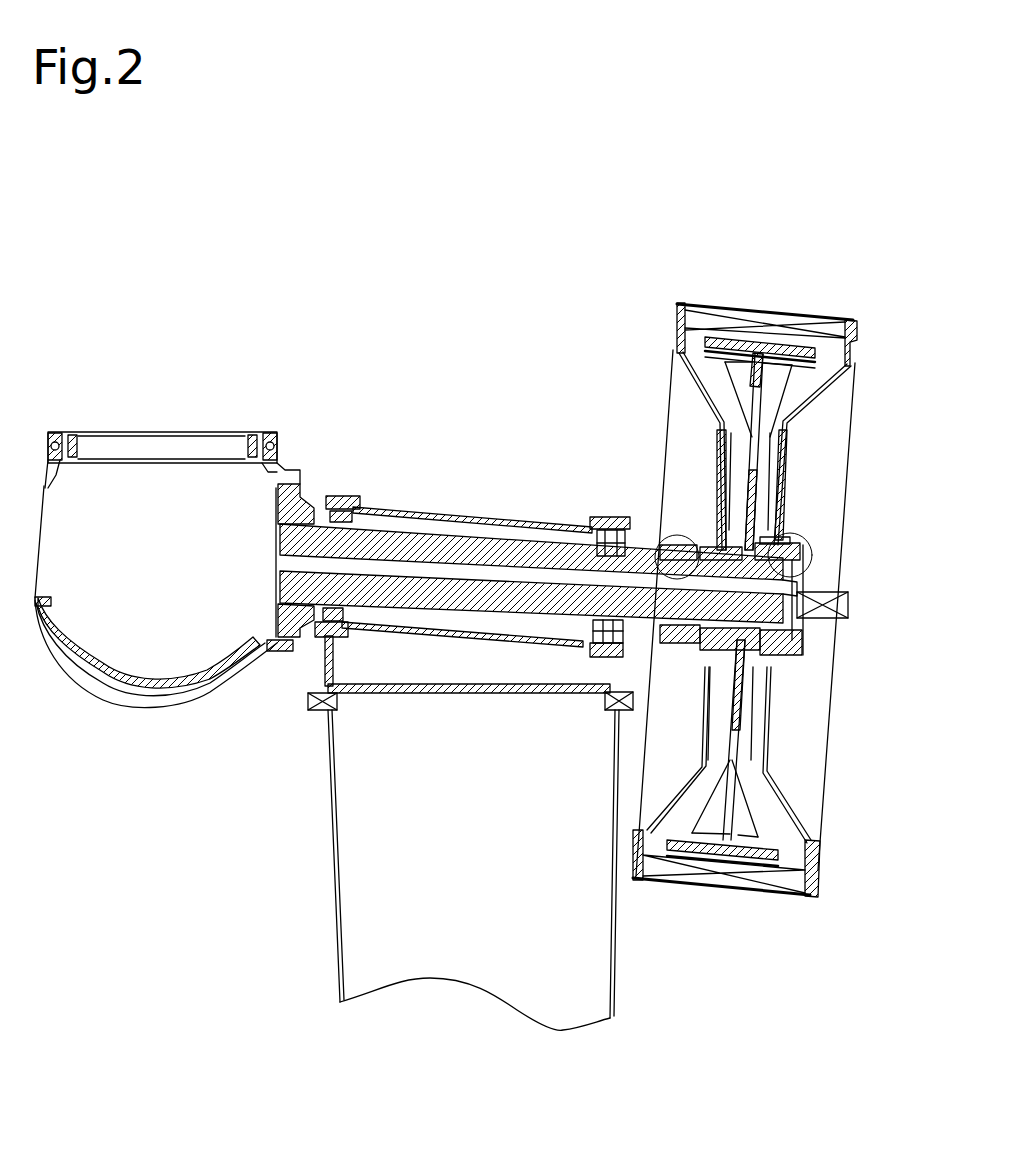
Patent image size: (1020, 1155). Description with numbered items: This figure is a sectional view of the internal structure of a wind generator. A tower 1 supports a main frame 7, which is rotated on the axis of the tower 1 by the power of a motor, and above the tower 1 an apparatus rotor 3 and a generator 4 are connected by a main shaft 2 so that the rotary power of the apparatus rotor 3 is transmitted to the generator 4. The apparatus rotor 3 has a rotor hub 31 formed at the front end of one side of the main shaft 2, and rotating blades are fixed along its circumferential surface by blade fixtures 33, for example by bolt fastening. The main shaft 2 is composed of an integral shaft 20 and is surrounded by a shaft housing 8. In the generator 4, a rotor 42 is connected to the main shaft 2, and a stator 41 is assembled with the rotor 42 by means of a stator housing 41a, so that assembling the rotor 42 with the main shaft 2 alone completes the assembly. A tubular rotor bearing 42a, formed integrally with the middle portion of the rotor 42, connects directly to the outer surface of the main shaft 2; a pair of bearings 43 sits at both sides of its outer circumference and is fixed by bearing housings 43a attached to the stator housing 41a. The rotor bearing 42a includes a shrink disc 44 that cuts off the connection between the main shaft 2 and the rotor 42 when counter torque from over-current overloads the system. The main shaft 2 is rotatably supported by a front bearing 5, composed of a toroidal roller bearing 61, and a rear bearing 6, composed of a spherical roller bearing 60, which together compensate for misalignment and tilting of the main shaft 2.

The tower 1 is at (333, 845).
The main shaft 2 is at (471, 517).
The integral shaft 20 is at (586, 534).
The apparatus rotor 3 is at (174, 569).
The rotor hub 31 is at (152, 706).
The blade fixture 33 is at (160, 437).
The generator 4 is at (734, 591).
The stator 41 is at (808, 327).
The stator housing 41a is at (716, 420).
The rotor 42 is at (750, 348).
The rotor bearing 42a is at (787, 575).
The bearing 43 is at (803, 558).
The bearing housing 43a is at (792, 546).
The shrink disc 44 is at (656, 543).
The front bearing 5 is at (333, 496).
The rear bearing 6 is at (592, 516).
The spherical roller bearing 60 is at (618, 520).
The toroidal roller bearing 61 is at (350, 496).
The main frame 7 is at (312, 677).
The shaft housing 8 is at (397, 508).